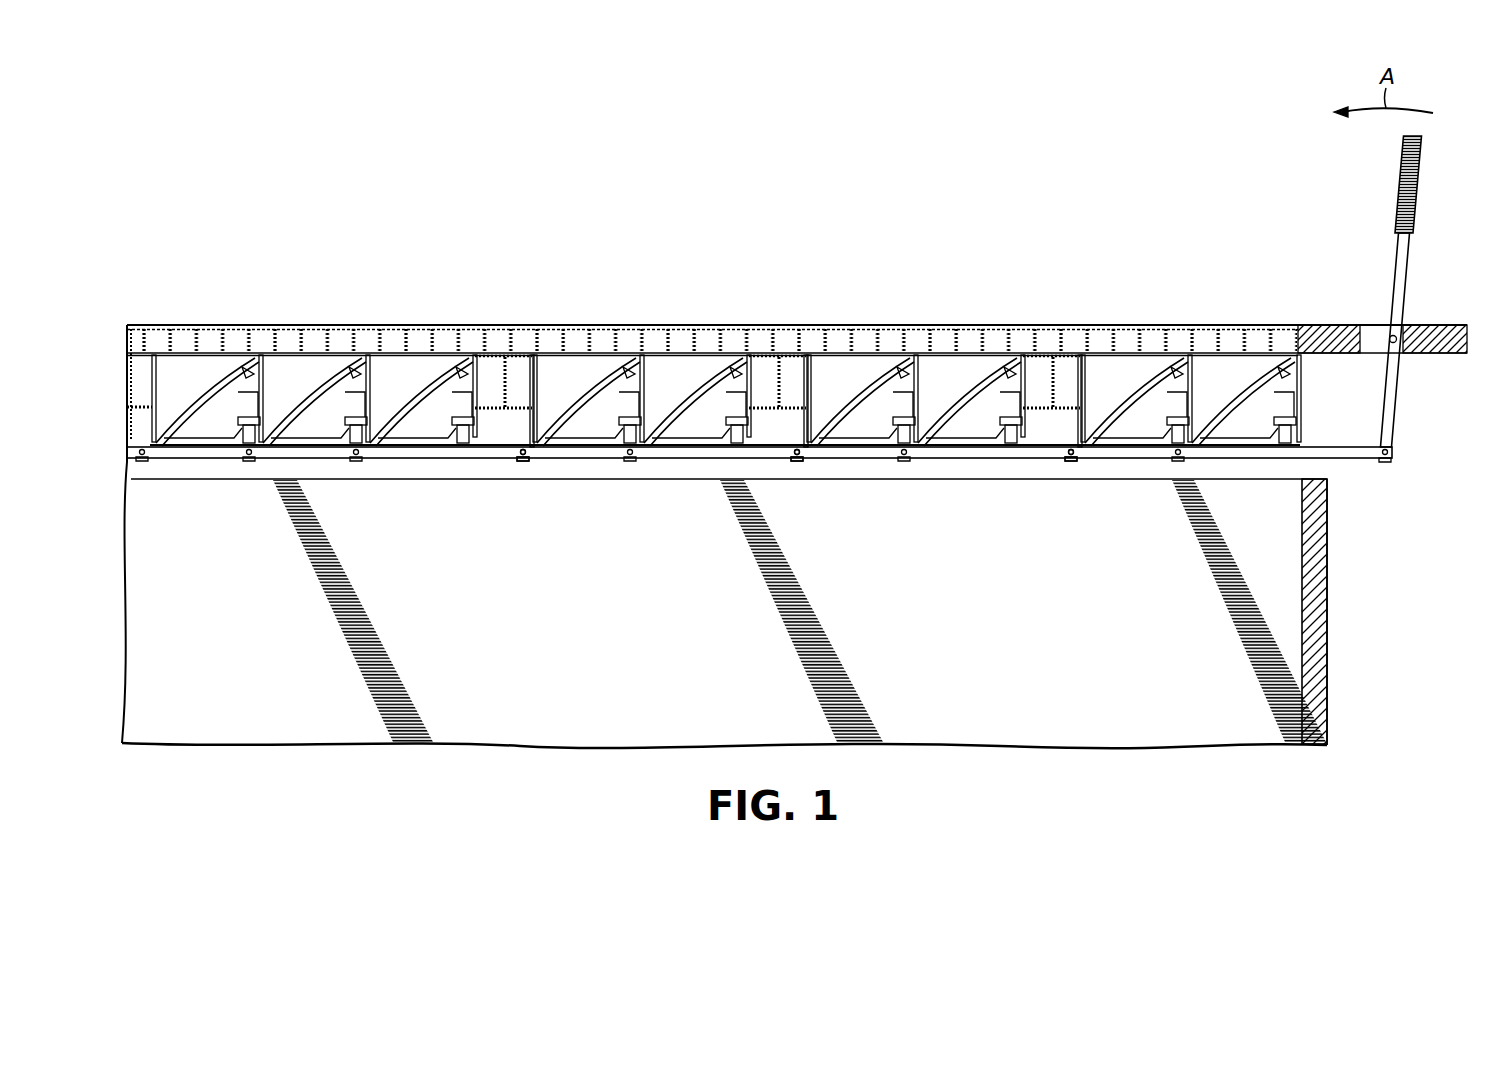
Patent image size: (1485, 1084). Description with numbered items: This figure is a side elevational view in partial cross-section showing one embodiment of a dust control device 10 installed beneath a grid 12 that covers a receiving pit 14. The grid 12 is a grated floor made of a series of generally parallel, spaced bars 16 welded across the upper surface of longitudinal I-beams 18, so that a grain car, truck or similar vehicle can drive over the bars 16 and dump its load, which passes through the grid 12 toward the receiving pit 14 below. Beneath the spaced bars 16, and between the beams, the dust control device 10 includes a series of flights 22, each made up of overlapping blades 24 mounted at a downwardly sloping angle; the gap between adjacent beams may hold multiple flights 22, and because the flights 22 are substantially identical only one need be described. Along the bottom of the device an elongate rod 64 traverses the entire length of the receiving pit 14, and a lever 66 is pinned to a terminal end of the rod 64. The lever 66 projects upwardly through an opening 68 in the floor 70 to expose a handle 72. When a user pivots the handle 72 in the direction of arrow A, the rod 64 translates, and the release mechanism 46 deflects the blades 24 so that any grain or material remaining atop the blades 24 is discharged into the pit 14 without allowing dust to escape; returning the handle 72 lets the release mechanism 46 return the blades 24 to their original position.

The dust control device 10 is at (292, 188).
The grid 12 is at (435, 320).
The receiving pit 14 is at (657, 661).
The spaced bars 16 is at (627, 338).
The longitudinal I-beams 18 is at (517, 377).
The flight 22 is at (583, 468).
The blade 24 is at (426, 397).
The release mechanism 46 is at (1399, 319).
The rod 64 is at (1357, 460).
The lever 66 is at (1397, 387).
The opening 68 is at (1362, 339).
The floor 70 is at (1313, 326).
The handle 72 is at (1402, 177).